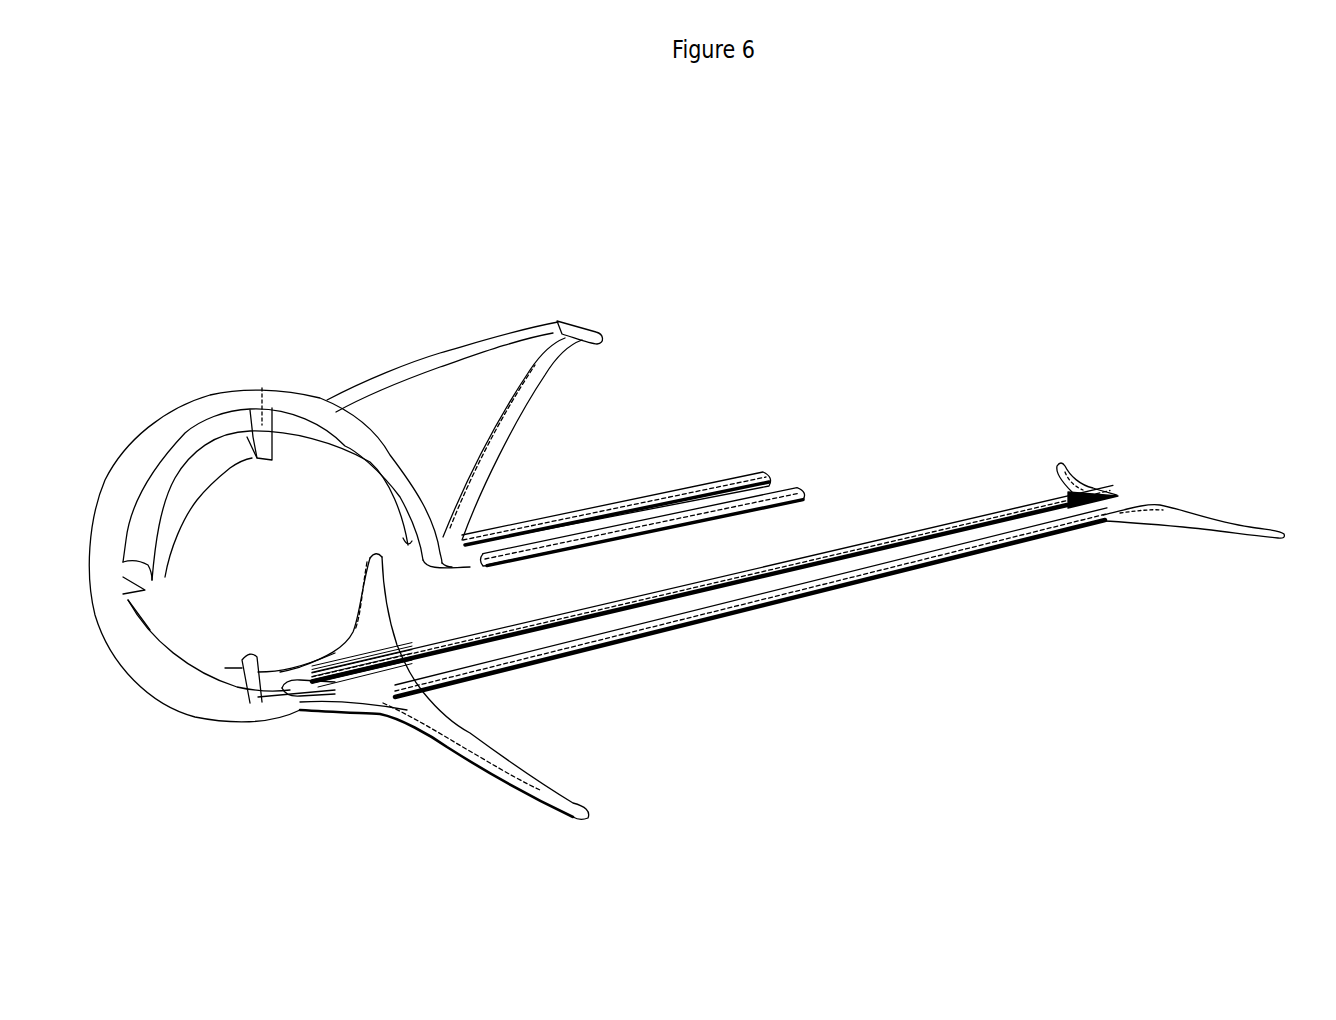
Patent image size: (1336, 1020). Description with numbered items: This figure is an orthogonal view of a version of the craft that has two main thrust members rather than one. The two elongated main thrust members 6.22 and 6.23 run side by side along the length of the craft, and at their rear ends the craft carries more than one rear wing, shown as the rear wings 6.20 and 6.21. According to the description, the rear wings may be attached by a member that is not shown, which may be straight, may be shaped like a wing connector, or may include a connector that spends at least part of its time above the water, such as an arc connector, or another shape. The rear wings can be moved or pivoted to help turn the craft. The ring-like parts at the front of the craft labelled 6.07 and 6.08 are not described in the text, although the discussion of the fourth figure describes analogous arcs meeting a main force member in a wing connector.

The ring 6.07 is at (205, 410).
The pivot pin 6.08 is at (233, 710).
The rear wing 6.20 is at (1100, 489).
The rear wing 6.21 is at (1223, 527).
The main thrust member 6.22 is at (813, 563).
The main thrust member 6.23 is at (767, 597).